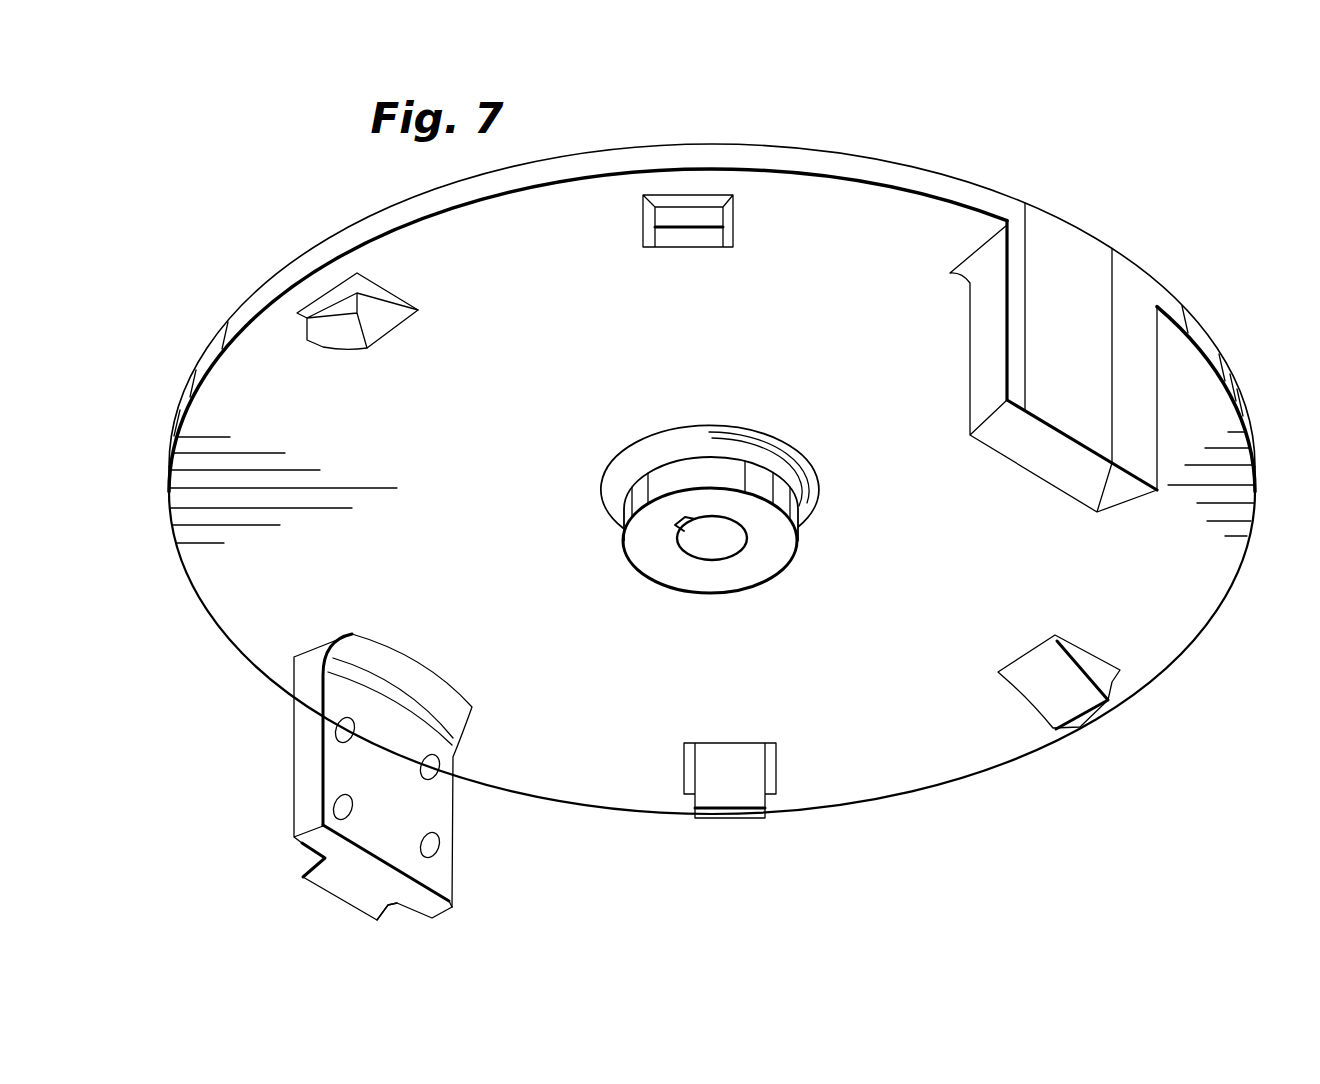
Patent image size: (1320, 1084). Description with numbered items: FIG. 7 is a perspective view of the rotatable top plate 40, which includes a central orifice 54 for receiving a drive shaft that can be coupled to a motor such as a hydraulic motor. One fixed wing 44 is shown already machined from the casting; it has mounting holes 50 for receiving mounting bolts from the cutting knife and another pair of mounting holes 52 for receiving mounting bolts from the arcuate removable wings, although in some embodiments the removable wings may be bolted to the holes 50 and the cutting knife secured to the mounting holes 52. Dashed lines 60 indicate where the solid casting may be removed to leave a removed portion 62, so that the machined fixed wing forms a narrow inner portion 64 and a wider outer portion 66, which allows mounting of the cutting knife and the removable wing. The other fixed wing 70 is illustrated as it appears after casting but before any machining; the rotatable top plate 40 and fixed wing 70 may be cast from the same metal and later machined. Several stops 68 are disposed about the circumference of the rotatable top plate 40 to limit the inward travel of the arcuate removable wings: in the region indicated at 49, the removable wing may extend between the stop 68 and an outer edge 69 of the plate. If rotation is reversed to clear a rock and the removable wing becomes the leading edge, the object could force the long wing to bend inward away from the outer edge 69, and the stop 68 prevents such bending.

The rotatable top plate 40 is at (531, 588).
The fixed wing 44 is at (455, 807).
The region 49 is at (316, 283).
The mounting holes 50 is at (438, 762).
The mounting holes 52 is at (345, 796).
The central orifice 54 is at (720, 545).
The dashed lines 60 is at (447, 912).
The removed portion 62 is at (410, 920).
The narrow inner portion 64 is at (332, 890).
The wider outer portion 66 is at (383, 862).
The stops 68 is at (676, 200).
The outer edge 69 is at (362, 240).
The fixed wing 70 is at (1074, 302).